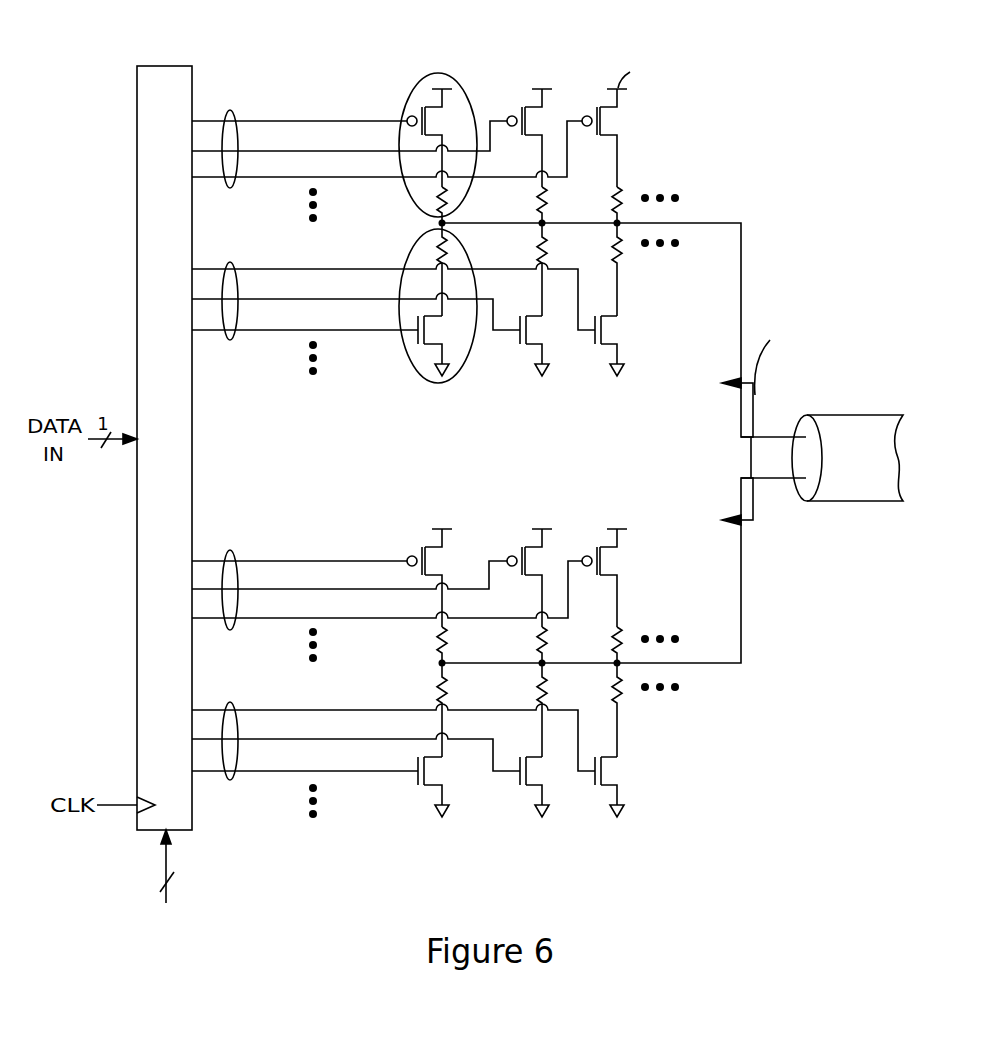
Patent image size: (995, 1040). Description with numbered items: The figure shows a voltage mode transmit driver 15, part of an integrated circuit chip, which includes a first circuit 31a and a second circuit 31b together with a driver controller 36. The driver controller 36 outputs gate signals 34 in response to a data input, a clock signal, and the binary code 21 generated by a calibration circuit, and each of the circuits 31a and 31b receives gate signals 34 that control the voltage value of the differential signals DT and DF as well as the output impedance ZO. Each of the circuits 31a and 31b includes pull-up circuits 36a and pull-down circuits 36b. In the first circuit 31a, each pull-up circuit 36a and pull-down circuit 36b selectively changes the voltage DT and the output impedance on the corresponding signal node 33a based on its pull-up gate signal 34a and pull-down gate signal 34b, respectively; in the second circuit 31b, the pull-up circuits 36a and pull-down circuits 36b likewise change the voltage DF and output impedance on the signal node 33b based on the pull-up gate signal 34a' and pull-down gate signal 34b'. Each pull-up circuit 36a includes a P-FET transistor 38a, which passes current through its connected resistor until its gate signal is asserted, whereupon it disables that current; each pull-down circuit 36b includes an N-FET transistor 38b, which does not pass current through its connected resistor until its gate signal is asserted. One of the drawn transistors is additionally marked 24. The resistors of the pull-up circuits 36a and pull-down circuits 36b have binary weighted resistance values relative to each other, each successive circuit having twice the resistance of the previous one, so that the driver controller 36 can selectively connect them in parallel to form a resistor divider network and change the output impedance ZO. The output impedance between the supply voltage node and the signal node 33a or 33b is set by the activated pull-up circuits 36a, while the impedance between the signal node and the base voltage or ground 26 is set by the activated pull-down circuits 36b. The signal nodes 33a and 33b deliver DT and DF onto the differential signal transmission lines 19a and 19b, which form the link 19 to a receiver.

The voltage mode transmit driver 15 is at (578, 544).
The driver controller 36 is at (192, 818).
The binary code 21 is at (195, 910).
The gate signals 34 is at (387, 121).
The pull-up gate signal 34a is at (252, 164).
The pull-down gate signal 34b is at (256, 286).
The pull-up gate signal 34a' is at (259, 576).
The pull-down gate signal 34b' is at (258, 726).
The first circuit 31a is at (596, 219).
The second circuit 31b is at (575, 606).
The pull-up circuit 36a is at (539, 326).
The pull-down circuit 36b is at (551, 509).
The P-FET transistor 38a is at (541, 322).
The N-FET transistor 38b is at (517, 609).
The signal node 33a is at (622, 222).
The signal node 33b is at (622, 664).
The base voltage 26 is at (540, 378).
The supply node transistor 24 is at (440, 527).
The link 19 is at (858, 418).
The differential signal transmission line 19a is at (800, 420).
The differential signal transmission line 19b is at (808, 500).